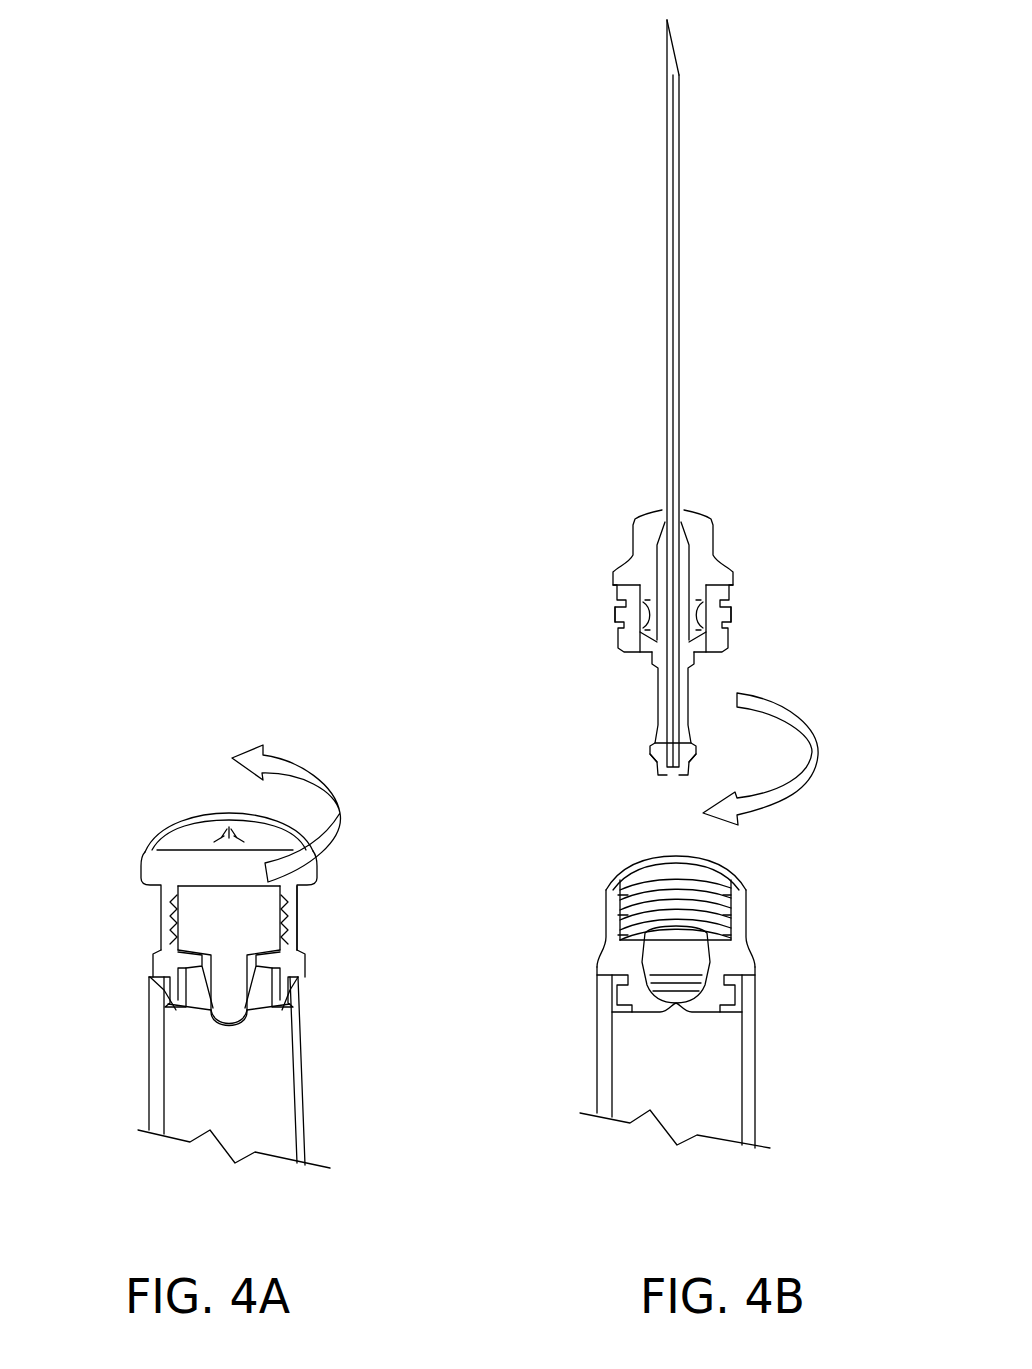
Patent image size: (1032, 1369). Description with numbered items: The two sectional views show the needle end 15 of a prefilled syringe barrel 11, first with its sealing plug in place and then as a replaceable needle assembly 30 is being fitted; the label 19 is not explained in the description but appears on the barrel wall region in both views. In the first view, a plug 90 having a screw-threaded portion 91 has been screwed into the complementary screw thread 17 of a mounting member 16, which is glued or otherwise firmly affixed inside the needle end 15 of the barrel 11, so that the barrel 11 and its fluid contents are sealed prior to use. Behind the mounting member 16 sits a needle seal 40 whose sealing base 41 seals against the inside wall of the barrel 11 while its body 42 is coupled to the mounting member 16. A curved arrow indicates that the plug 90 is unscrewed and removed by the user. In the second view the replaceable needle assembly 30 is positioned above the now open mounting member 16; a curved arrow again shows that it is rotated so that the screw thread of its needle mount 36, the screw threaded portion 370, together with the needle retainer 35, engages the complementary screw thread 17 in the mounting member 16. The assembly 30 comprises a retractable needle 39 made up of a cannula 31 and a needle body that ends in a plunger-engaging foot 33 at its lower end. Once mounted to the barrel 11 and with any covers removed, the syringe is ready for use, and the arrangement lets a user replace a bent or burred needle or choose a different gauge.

In FIG. 4A, the barrel 11 is at (570, 1064).
In FIG. 4A, the needle end 15 is at (570, 996).
In FIG. 4A, the mounting member 16 is at (300, 916).
In FIG. 4A, the screw thread 17 is at (176, 950).
In FIG. 4B, the screw thread 17 is at (657, 890).
In FIG. 4A, the vial body 19 is at (246, 1097).
In FIG. 4B, the vial body 19 is at (694, 1080).
In FIG. 4B, the replaceable needle assembly 30 is at (666, 620).
In FIG. 4B, the cannula 31 is at (667, 163).
In FIG. 4B, the plunger-engaging foot 33 is at (662, 765).
In FIG. 4B, the needle retainer 35 is at (740, 603).
In FIG. 4B, the needle mount 36 is at (760, 537).
In FIG. 4B, the retractable needle 39 is at (652, 698).
In FIG. 4A, the needle seal 40 is at (178, 1010).
In FIG. 4A, the sealing base 41 is at (298, 1000).
In FIG. 4A, the body 42 is at (268, 996).
In FIG. 4A, the plug 90 is at (218, 880).
In FIG. 4A, the screw-threaded portion 91 is at (166, 906).
In FIG. 4B, the screw threaded portion 370 is at (615, 628).